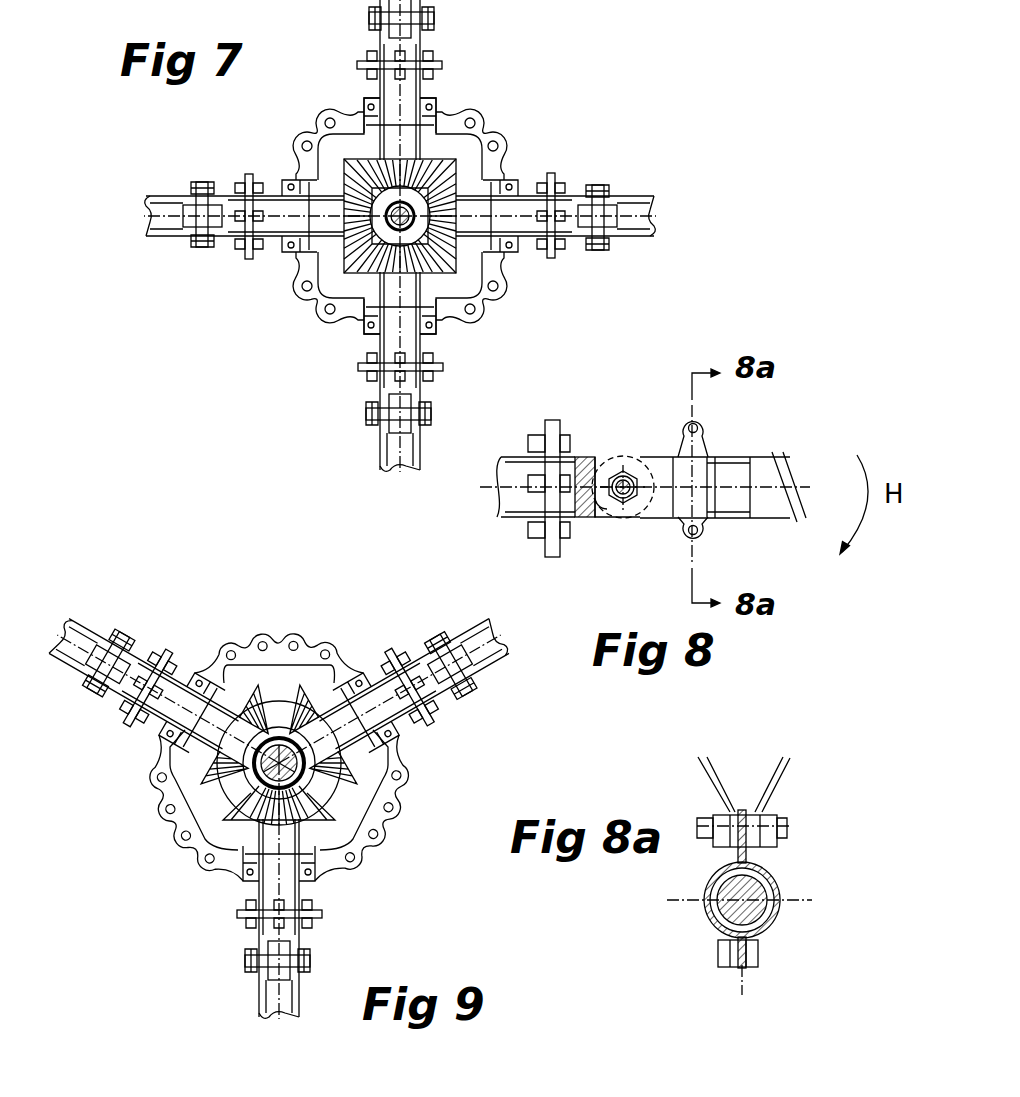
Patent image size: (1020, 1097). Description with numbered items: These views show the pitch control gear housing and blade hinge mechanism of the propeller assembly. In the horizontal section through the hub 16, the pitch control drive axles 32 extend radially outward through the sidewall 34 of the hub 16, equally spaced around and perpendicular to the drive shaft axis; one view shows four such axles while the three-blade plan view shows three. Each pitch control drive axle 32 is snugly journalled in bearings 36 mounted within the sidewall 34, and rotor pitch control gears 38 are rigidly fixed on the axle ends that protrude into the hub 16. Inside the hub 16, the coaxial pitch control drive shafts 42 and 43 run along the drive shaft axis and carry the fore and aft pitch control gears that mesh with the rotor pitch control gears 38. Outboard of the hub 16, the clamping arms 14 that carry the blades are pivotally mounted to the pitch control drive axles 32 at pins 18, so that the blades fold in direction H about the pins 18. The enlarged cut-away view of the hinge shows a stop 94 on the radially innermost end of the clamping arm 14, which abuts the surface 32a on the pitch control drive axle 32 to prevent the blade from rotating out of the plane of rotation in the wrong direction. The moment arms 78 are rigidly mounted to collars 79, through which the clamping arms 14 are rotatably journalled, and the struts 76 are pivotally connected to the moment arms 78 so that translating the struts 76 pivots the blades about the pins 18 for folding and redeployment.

In FIG. 7, the clamping arms 14 is at (647, 212).
In FIG. 8, the clamping arms 14 is at (745, 487).
In FIG. 8A, the clamping arms 14 is at (767, 893).
In FIG. 9, the clamping arms 14 is at (488, 636).
In FIG. 7, the hub 16 is at (486, 262).
In FIG. 9, the hub 16 is at (385, 785).
In FIG. 7, the pins 18 is at (600, 184).
In FIG. 8, the pins 18 is at (624, 470).
In FIG. 9, the pins 18 is at (467, 695).
In FIG. 7, the pitch control drive axles 32 is at (525, 212).
In FIG. 8, the pitch control drive axles 32 is at (518, 477).
In FIG. 9, the pitch control drive axles 32 is at (284, 872).
In FIG. 8, the surface 32a is at (597, 520).
In FIG. 7, the sidewall 34 is at (503, 180).
In FIG. 9, the sidewall 34 is at (350, 676).
In FIG. 7, the bearings 36 is at (523, 183).
In FIG. 9, the bearings 36 is at (342, 688).
In FIG. 7, the rotor pitch control gears 38 is at (443, 154).
In FIG. 7, the coaxial pitch control drive shaft 42 is at (350, 170).
In FIG. 7, the coaxial pitch control drive shaft 43 is at (352, 268).
In FIG. 8A, the struts 76 is at (777, 787).
In FIG. 8, the moment arms 78 is at (700, 447).
In FIG. 8A, the moment arms 78 is at (750, 845).
In FIG. 8A, the collars 79 is at (777, 923).
In FIG. 8, the stop 94 is at (592, 456).